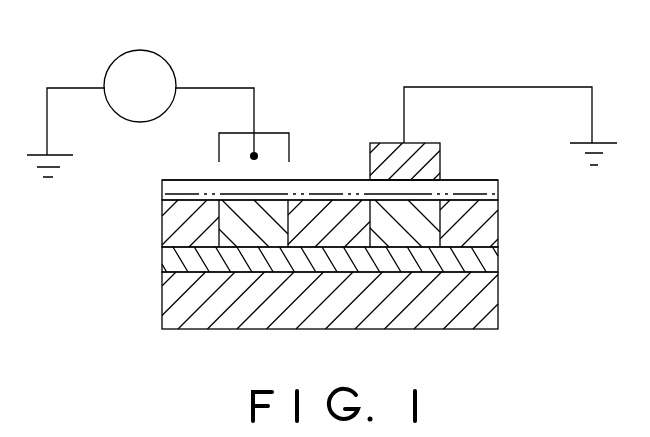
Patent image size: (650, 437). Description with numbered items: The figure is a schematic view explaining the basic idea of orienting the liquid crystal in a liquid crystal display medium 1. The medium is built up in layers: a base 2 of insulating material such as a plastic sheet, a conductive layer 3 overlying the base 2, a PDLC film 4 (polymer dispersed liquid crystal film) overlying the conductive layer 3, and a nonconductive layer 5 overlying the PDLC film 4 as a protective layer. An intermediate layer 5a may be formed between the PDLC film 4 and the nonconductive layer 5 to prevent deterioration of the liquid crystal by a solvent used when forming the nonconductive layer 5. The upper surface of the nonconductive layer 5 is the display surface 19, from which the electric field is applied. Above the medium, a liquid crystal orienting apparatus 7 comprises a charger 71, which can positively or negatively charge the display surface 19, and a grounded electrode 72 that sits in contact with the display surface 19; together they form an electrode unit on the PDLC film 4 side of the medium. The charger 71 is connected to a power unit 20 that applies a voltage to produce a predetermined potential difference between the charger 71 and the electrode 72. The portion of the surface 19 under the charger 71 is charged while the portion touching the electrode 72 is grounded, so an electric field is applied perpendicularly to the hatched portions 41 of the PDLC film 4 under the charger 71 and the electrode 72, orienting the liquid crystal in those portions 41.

The liquid crystal display medium 1 is at (509, 331).
The base 2 is at (499, 303).
The conductive layer 3 is at (499, 260).
The PDLC film 4 is at (499, 223).
The hatched portions 41 is at (236, 209).
The nonconductive layer 5 is at (332, 194).
The intermediate layer 5a is at (165, 192).
The liquid crystal orienting apparatus 7 is at (371, 76).
The display surface 19 is at (166, 180).
The power unit 20 is at (166, 60).
The charger 71 is at (271, 133).
The grounded electrode 72 is at (433, 148).